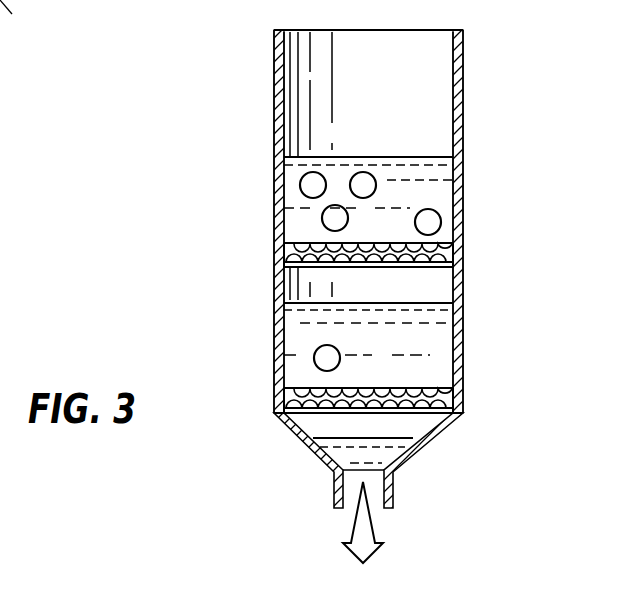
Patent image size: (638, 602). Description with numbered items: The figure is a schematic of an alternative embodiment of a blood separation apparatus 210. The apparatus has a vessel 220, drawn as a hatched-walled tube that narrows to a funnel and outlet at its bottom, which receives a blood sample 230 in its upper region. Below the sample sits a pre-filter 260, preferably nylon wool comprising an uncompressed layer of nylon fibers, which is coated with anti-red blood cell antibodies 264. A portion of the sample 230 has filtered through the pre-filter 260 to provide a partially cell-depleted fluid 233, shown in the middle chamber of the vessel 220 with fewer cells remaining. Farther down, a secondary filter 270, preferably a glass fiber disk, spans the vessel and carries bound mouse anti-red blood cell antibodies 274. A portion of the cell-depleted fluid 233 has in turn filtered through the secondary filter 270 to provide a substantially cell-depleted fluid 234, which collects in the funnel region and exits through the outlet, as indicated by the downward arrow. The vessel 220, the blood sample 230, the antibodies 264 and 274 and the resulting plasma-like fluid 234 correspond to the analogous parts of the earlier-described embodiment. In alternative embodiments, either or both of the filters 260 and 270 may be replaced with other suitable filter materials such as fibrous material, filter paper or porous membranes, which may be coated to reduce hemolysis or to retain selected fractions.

The blood separation apparatus 210 is at (222, 148).
The vessel 220 is at (465, 77).
The blood sample 230 is at (412, 173).
The pre-filter 260 is at (458, 250).
The anti-red blood cell antibodies 264 is at (310, 268).
The partially cell-depleted fluid 233 is at (300, 318).
The secondary filter 270 is at (454, 394).
The anti-red blood cell antibodies 274 is at (303, 410).
The substantially cell-depleted fluid 234 is at (336, 455).